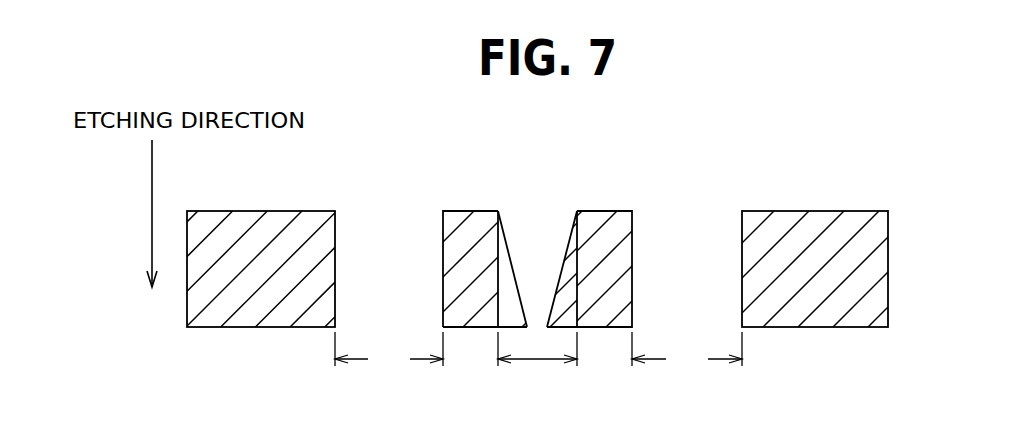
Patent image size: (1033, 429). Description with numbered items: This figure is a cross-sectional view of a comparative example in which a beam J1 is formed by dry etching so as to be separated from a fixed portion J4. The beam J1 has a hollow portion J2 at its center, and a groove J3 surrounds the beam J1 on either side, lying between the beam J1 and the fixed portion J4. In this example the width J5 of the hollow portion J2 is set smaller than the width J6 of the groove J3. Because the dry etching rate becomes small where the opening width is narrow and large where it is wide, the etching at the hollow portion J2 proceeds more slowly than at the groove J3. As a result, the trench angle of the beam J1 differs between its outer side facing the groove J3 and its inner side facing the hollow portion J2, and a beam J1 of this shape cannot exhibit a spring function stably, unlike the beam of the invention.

The beam J1 is at (605, 211).
The hollow portion J2 is at (528, 225).
The groove J3 is at (388, 222).
The fixed portion J4 is at (245, 211).
The width of the hollow portion J5 is at (538, 360).
The width of the groove J6 is at (538, 353).